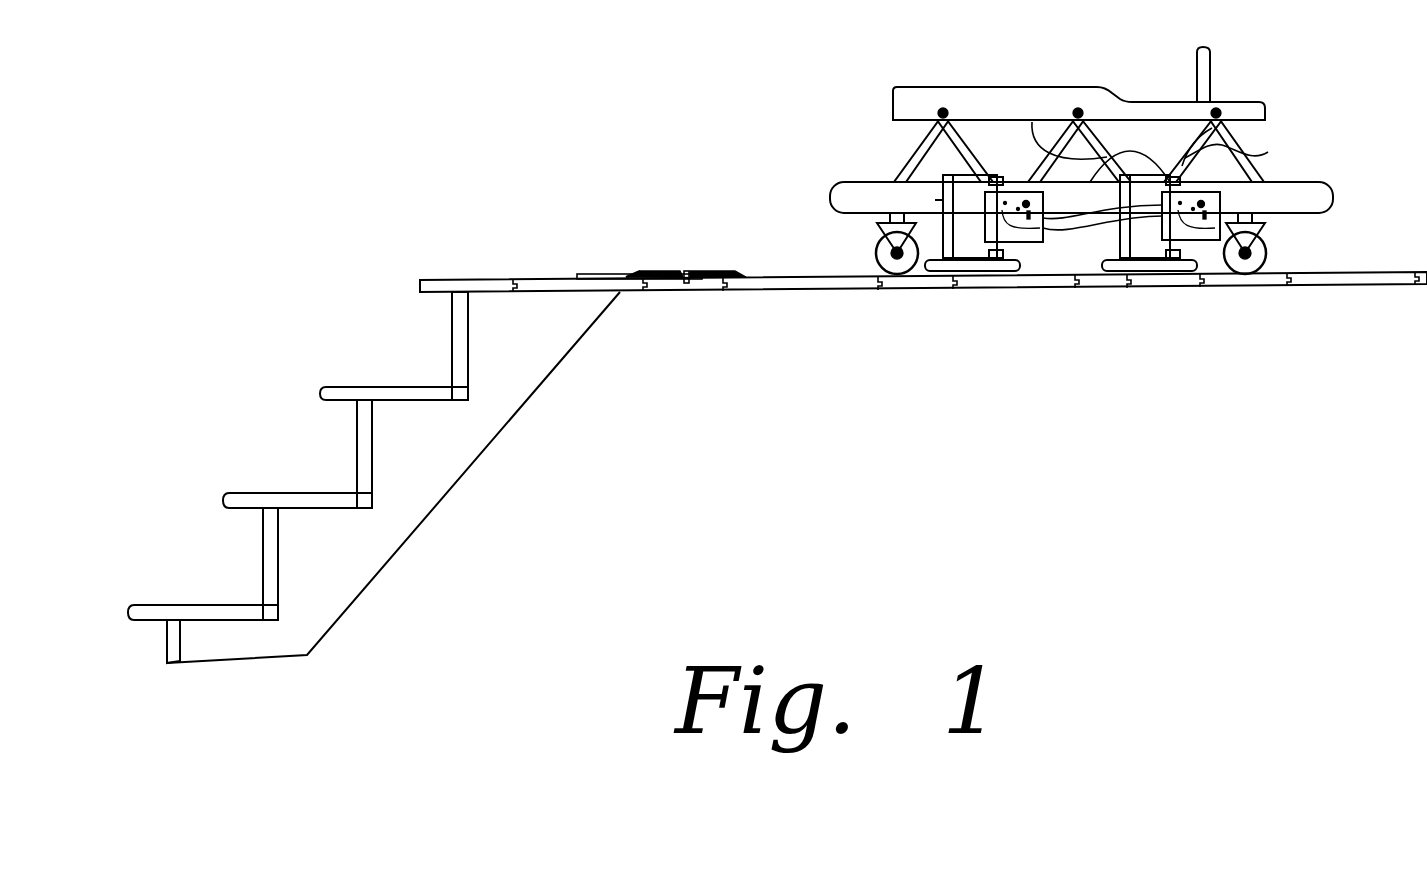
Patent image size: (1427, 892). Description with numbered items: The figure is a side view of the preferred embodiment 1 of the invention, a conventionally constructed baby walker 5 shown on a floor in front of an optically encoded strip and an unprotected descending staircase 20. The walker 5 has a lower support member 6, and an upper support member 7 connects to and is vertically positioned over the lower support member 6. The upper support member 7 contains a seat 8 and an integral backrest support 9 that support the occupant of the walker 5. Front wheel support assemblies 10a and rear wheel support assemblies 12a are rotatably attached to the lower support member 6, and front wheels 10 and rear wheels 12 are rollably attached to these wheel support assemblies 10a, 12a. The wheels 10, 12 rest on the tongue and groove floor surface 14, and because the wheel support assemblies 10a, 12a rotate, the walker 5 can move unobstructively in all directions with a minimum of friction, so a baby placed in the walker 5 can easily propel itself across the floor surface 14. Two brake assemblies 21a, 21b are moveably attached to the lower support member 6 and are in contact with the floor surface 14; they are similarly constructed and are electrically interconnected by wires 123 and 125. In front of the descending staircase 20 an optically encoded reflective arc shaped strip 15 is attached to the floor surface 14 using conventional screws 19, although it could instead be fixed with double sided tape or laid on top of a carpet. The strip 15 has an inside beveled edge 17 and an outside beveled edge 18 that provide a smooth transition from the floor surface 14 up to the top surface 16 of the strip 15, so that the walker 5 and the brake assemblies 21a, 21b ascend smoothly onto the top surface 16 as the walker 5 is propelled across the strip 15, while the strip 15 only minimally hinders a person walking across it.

The preferred embodiment 1 is at (738, 447).
The baby walker 5 is at (1020, 87).
The lower support member 6 is at (848, 182).
The upper support member 7 is at (894, 94).
The seat 8 is at (1268, 152).
The integral backrest support 9 is at (1210, 50).
The front wheels 10 is at (876, 255).
The front wheel support assemblies 10a is at (880, 224).
The rear wheels 12 is at (1268, 258).
The rear wheel support assemblies 12a is at (1263, 226).
The tongue and groove floor surface 14 is at (497, 280).
The optically encoded reflective arc shaped strip 15 is at (577, 275).
The top surface 16 is at (668, 272).
The inside beveled edge 17 is at (630, 275).
The outside beveled edge 18 is at (740, 272).
The screws 19 is at (688, 270).
The descending staircase 20 is at (325, 387).
The brake assembly 21a is at (1033, 278).
The brake assembly 21b is at (1208, 278).
The wires 123 is at (1100, 226).
The wires 125 is at (1120, 200).